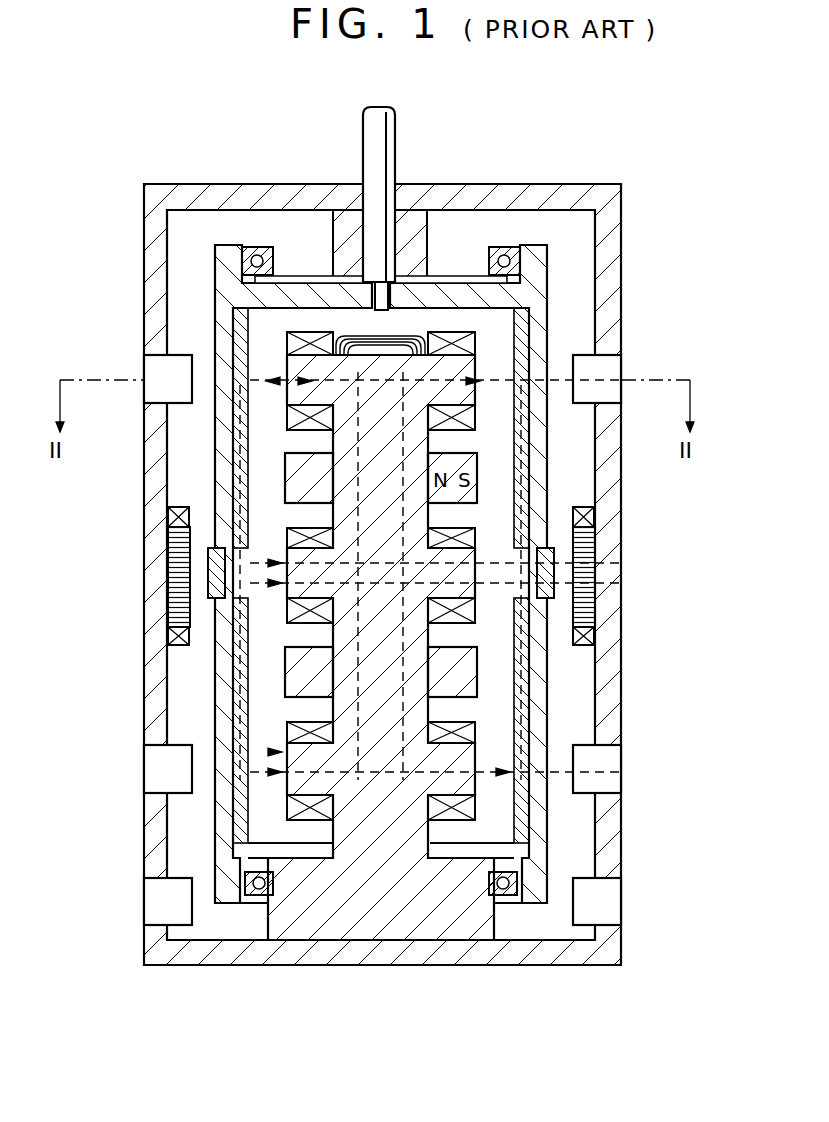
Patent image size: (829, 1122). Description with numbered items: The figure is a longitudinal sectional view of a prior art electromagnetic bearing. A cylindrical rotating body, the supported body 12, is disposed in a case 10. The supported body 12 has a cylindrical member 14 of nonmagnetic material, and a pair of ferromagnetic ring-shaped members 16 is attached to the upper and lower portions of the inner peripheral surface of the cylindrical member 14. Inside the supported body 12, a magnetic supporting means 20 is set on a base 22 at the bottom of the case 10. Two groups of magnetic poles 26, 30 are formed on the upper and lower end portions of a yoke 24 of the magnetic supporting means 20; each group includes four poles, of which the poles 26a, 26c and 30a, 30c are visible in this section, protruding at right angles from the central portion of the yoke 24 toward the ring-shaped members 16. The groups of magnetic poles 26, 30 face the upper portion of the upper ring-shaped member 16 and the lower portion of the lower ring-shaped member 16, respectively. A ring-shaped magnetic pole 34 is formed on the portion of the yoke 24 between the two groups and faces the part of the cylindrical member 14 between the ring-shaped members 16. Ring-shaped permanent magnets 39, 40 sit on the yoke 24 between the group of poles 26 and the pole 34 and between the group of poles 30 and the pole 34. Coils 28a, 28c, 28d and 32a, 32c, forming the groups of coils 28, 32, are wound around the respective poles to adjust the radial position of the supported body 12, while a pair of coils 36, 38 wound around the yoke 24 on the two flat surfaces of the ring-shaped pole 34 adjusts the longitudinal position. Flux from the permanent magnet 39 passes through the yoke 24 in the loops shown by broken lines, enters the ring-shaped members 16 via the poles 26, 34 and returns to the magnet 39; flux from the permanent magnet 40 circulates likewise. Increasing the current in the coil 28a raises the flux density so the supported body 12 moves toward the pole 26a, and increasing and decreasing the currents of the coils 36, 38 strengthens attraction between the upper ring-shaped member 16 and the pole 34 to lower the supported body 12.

The case 10 is at (607, 262).
The supported body 12 is at (194, 706).
The cylindrical member 14 is at (221, 645).
The ring-shaped members 16 is at (240, 478).
The magnetic supporting means 20 is at (490, 532).
The base 22 is at (372, 862).
The yoke 24 is at (392, 714).
The group of magnetic poles 26 is at (300, 371).
The magnetic pole 26a is at (262, 366).
The magnetic pole 26c is at (478, 408).
The group of coils 28 is at (291, 343).
The coil 28a is at (268, 404).
The coil 28c is at (474, 348).
The coil 28d is at (378, 338).
The group of magnetic poles 30 is at (298, 784).
The magnetic pole 30a is at (287, 752).
The magnetic pole 30c is at (478, 792).
The group of coils 32 is at (293, 737).
The coil 32a is at (297, 821).
The coil 32c is at (480, 735).
The ring-shaped magnetic pole 34 is at (289, 590).
The coil 36 is at (291, 540).
The coil 38 is at (293, 628).
The permanent magnet 39 is at (291, 452).
The permanent magnet 40 is at (291, 679).